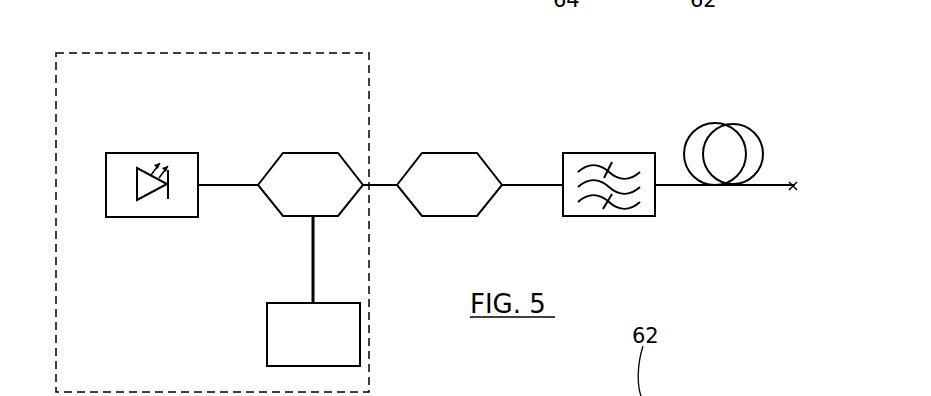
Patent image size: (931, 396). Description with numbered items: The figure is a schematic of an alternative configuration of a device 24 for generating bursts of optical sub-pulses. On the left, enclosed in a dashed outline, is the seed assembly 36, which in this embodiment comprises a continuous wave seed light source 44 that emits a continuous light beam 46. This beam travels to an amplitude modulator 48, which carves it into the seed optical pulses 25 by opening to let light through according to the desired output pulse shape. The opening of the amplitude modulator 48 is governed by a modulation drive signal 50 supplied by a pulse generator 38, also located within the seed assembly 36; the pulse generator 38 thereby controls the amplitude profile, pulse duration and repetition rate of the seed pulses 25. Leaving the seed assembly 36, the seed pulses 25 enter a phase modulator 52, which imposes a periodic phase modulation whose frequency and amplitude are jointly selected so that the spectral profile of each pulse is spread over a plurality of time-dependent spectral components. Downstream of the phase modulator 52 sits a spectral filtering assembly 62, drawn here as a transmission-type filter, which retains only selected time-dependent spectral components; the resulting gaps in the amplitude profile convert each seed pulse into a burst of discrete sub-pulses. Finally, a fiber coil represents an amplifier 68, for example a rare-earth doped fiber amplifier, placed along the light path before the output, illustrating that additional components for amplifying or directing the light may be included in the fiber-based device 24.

The device 24 is at (391, 72).
The seed optical pulses 25 is at (376, 184).
The seed assembly 36 is at (207, 53).
The pulse generator 38 is at (267, 340).
The continuous wave seed light source 44 is at (142, 218).
The continuous light beam 46 is at (214, 184).
The amplitude modulator 48 is at (313, 153).
The modulation drive signal 50 is at (313, 253).
The phase modulator 52 is at (467, 153).
The spectral filtering assembly 62 is at (593, 153).
The amplifier 68 is at (755, 143).